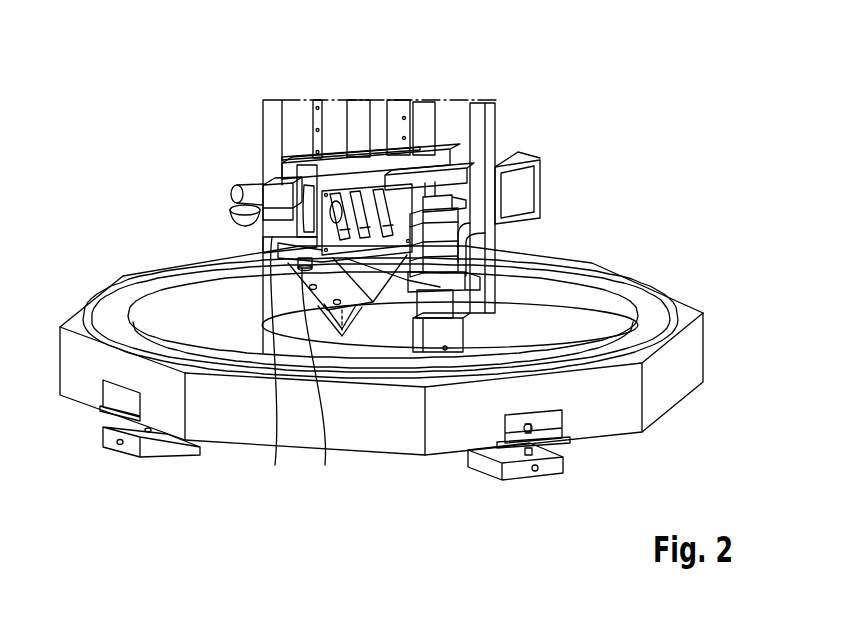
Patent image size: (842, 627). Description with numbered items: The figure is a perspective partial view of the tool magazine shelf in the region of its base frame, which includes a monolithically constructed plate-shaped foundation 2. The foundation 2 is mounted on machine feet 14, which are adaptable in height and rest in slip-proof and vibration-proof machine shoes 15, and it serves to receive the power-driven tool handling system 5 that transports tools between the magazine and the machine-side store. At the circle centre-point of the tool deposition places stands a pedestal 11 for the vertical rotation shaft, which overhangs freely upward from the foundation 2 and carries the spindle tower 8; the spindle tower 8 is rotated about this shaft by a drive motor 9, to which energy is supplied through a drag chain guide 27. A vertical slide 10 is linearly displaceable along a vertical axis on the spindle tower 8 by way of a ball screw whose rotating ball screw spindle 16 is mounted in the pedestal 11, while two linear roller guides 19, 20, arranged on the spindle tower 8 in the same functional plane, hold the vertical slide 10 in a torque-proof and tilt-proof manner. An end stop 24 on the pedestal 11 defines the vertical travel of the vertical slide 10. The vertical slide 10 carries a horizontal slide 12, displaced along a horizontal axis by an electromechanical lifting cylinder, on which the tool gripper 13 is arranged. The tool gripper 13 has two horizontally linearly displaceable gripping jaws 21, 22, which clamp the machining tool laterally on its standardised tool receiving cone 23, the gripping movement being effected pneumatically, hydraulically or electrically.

The foundation 2 is at (600, 330).
The tool handling system 5 is at (298, 146).
The spindle tower 8 is at (270, 118).
The drive motor 9 is at (470, 217).
The vertical slide 10 is at (284, 163).
The pedestal 11 is at (592, 330).
The horizontal slide 12 is at (273, 367).
The tool gripper 13 is at (184, 168).
The machine feet 14 is at (540, 433).
The machine shoes 15 is at (485, 468).
The ball screw spindle 16 is at (352, 110).
The linear roller guide 19 is at (317, 102).
The linear roller guide 20 is at (403, 108).
The gripping jaw 21 is at (230, 193).
The gripping jaw 22 is at (228, 212).
The tool receiving cone 23 is at (228, 200).
The end stop 24 is at (319, 382).
The drag chain guide 27 is at (488, 233).